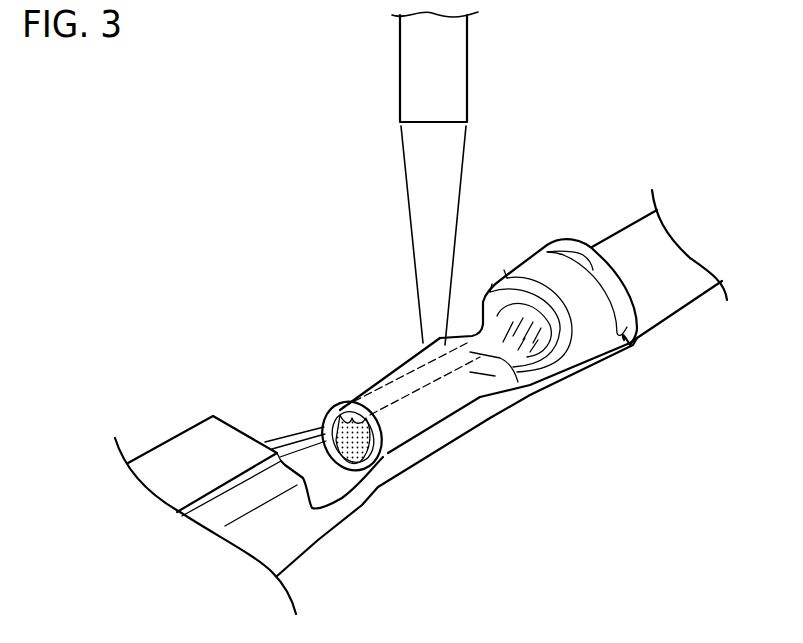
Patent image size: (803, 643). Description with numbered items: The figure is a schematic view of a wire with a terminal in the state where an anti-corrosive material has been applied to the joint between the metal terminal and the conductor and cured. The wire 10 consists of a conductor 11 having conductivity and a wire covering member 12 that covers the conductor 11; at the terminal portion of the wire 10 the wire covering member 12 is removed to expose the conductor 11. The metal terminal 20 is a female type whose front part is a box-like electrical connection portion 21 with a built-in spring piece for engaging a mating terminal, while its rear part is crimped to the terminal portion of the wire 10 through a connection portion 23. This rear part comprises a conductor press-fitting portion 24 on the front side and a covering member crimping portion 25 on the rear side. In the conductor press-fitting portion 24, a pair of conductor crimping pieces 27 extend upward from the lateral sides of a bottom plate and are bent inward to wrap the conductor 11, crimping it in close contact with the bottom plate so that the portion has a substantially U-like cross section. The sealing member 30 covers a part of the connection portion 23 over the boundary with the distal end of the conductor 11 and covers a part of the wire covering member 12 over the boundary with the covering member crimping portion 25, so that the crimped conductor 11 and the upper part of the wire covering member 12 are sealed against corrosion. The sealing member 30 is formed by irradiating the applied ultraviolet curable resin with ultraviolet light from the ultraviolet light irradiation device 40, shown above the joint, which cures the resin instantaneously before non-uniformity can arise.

The wire 10 is at (600, 230).
The conductor 11 is at (523, 372).
The wire covering member 12 is at (662, 287).
The metal terminal 20 is at (160, 418).
The electrical connection portion 21 is at (203, 481).
The connection portion 23 is at (367, 492).
The conductor press-fitting portion 24 is at (402, 362).
The covering member crimping portion 25 is at (538, 266).
The conductor crimping pieces 27 is at (435, 403).
The sealing member 30 is at (583, 332).
The ultraviolet light irradiation device 40 is at (443, 66).